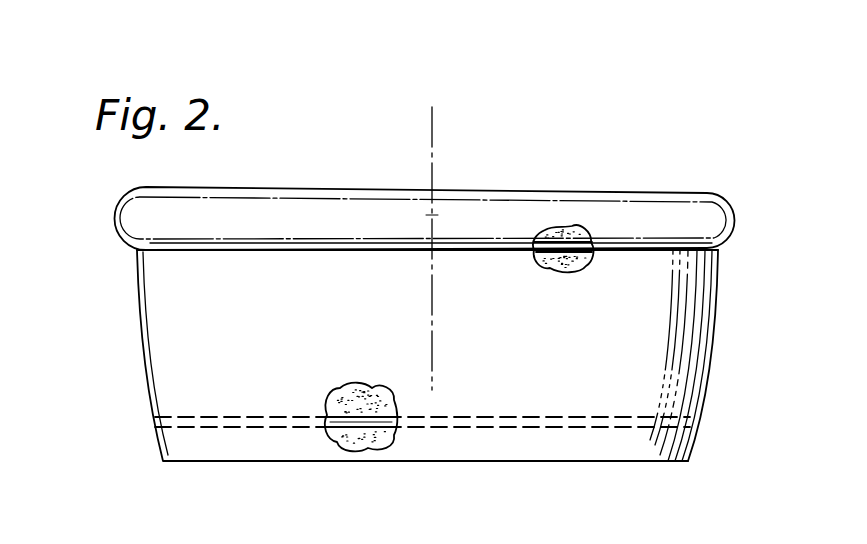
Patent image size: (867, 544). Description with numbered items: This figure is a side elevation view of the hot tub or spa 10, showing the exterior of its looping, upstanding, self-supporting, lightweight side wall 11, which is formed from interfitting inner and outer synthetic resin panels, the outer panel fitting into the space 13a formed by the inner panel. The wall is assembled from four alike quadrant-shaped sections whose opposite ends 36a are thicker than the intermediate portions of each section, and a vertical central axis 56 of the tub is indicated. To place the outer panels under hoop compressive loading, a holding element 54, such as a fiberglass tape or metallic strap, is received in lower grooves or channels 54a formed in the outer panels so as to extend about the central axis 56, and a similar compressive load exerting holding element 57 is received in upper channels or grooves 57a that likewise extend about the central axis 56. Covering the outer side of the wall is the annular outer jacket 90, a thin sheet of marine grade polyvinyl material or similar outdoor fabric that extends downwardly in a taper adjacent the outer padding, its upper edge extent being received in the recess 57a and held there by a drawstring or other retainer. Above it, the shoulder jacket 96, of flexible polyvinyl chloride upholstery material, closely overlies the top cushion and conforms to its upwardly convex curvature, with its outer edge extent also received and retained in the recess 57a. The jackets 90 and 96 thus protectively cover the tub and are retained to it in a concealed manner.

The tub or spa 10 is at (703, 171).
The side wall 11 is at (720, 306).
The space 13a is at (376, 432).
The section opposite ends 36a is at (432, 215).
The holding element 54 is at (345, 440).
The lower grooves or channels 54a is at (155, 426).
The central axis 56 is at (432, 128).
The compressive load exerting holding element 57 is at (566, 247).
The upper channels or grooves 57a is at (135, 253).
The outer jacket 90 is at (296, 334).
The shoulder jacket 96 is at (350, 206).